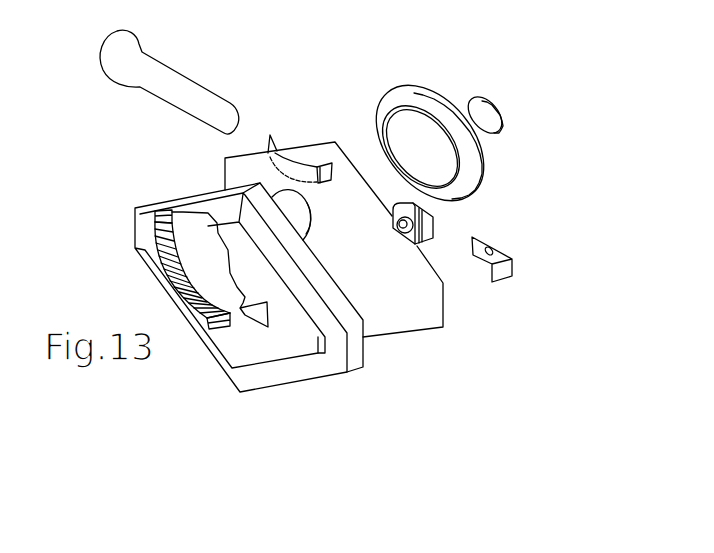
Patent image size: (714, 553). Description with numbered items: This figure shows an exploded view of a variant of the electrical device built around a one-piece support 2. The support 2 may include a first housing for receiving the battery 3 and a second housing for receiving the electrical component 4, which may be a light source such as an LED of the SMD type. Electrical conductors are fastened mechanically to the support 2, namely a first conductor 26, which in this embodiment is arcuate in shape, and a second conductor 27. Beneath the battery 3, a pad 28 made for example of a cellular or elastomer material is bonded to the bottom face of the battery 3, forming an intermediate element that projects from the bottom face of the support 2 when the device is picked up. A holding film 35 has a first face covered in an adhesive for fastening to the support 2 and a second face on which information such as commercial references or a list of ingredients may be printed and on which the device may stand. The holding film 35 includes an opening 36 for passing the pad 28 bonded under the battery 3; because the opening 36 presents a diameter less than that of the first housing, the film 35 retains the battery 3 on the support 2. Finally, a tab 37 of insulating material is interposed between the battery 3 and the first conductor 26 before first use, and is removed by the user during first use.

The support 2 is at (168, 197).
The battery 3 is at (428, 96).
The electrical component 4 is at (435, 232).
The first conductor 26 is at (275, 150).
The second conductor 27 is at (513, 268).
The pad 28 is at (503, 112).
The holding film 35 is at (443, 307).
The opening 36 is at (297, 212).
The tab 37 is at (162, 70).